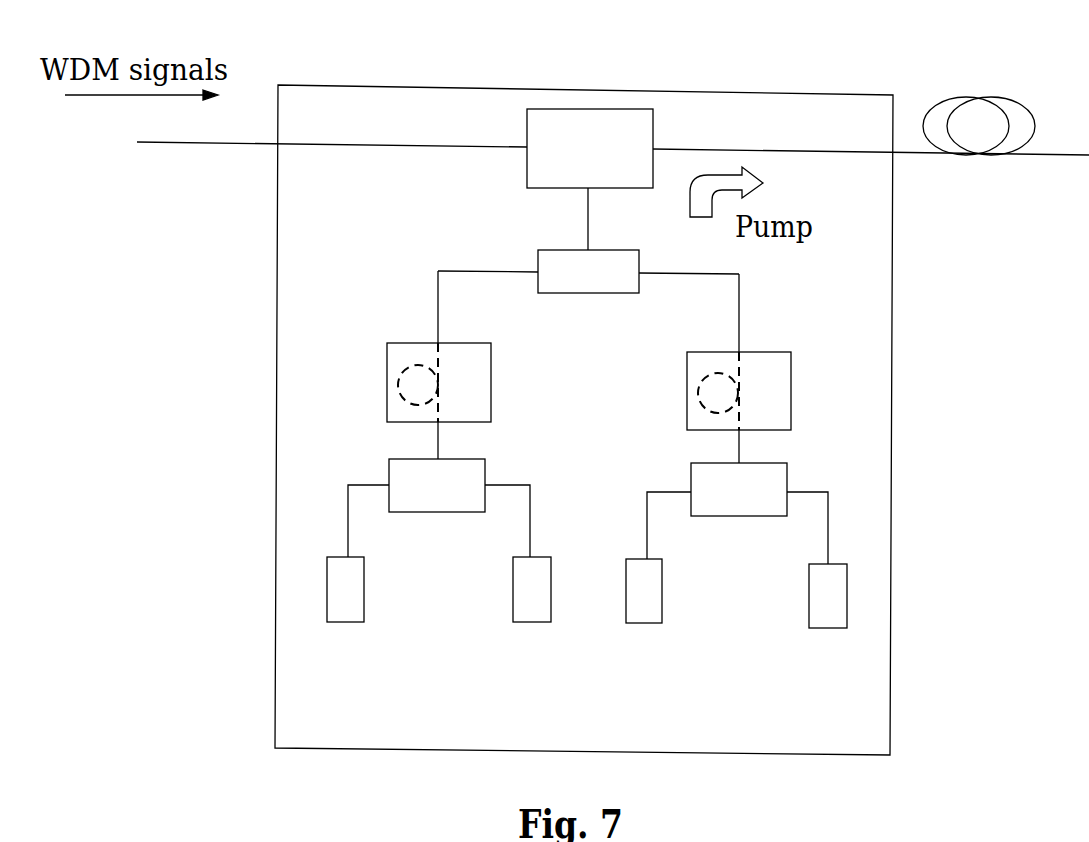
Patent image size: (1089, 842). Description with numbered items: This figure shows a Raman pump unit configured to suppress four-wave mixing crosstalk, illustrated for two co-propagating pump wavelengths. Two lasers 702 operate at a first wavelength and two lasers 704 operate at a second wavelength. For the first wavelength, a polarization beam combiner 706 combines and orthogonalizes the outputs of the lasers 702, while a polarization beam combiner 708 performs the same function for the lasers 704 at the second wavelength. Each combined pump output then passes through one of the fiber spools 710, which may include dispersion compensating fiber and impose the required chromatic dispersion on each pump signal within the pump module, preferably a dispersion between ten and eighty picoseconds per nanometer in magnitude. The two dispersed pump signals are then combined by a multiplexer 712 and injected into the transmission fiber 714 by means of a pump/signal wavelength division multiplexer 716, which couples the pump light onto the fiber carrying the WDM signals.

The lasers 702 is at (356, 558).
The lasers 704 is at (658, 560).
The polarization beam combiner 706 is at (462, 461).
The polarization beam combiner 708 is at (772, 463).
The fiber spools 710 is at (454, 345).
The multiplexer 712 is at (610, 250).
The transmission fiber 714 is at (1023, 107).
The pump/signal wavelength division multiplexer 716 is at (625, 109).